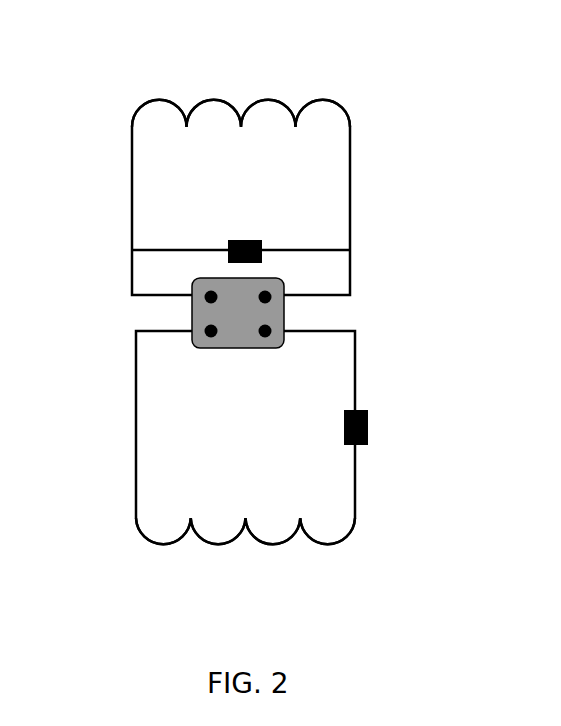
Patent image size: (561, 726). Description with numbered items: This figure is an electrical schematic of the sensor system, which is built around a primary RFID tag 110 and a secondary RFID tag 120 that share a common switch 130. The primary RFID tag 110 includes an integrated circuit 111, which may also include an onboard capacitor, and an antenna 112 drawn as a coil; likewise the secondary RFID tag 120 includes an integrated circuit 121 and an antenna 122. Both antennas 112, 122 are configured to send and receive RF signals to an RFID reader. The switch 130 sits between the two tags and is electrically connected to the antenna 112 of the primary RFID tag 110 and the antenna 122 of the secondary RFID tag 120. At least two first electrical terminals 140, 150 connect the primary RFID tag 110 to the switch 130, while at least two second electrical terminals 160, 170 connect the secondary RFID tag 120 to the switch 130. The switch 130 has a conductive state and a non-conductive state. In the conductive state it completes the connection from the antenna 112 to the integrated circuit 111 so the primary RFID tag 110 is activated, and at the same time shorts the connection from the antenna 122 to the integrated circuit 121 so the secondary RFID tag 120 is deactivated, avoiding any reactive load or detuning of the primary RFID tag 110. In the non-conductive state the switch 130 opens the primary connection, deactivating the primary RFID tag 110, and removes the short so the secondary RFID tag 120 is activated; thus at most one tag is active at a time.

The primary RFID tag 110 is at (385, 550).
The integrated circuit 111 is at (368, 417).
The antenna 112 is at (165, 545).
The secondary RFID tag 120 is at (379, 88).
The integrated circuit 121 is at (262, 243).
The antenna 122 is at (203, 100).
The switch 130 is at (284, 313).
The first electrical terminal 140 is at (211, 331).
The first electrical terminal 150 is at (265, 331).
The second electrical terminal 160 is at (211, 297).
The second electrical terminal 170 is at (265, 297).